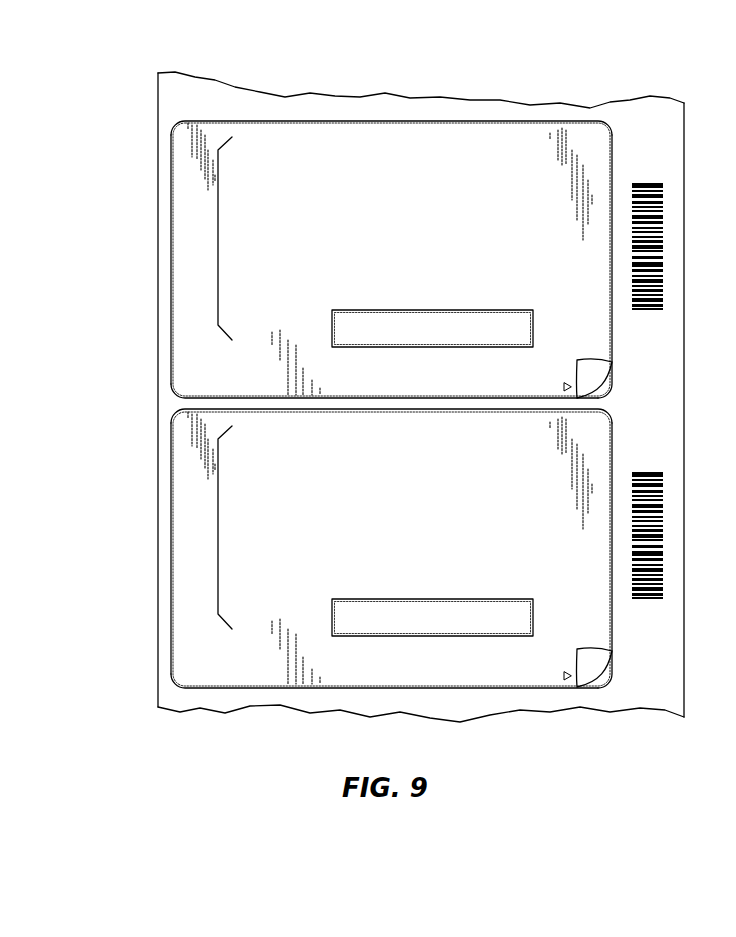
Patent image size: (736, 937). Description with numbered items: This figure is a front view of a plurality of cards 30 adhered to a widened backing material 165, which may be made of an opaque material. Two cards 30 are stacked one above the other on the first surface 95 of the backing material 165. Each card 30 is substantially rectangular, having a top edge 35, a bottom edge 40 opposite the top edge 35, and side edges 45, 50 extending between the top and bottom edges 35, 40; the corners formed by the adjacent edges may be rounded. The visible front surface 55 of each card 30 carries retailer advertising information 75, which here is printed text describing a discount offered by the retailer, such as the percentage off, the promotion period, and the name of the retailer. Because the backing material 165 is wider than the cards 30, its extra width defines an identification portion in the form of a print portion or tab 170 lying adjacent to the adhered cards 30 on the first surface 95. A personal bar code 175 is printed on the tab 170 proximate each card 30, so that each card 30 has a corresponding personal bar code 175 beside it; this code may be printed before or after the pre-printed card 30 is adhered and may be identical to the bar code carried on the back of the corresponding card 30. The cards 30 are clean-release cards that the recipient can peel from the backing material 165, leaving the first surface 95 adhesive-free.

The card 30 is at (152, 261).
The top edge 35 is at (420, 120).
The bottom edge 40 is at (200, 397).
The side edge 45 is at (171, 318).
The side edge 50 is at (613, 158).
The front surface 55 is at (272, 142).
The retailer advertising information 75 is at (217, 256).
The first surface 95 is at (211, 111).
The backing material 165 is at (157, 100).
The tab 170 is at (643, 90).
The personal bar code 175 is at (648, 312).